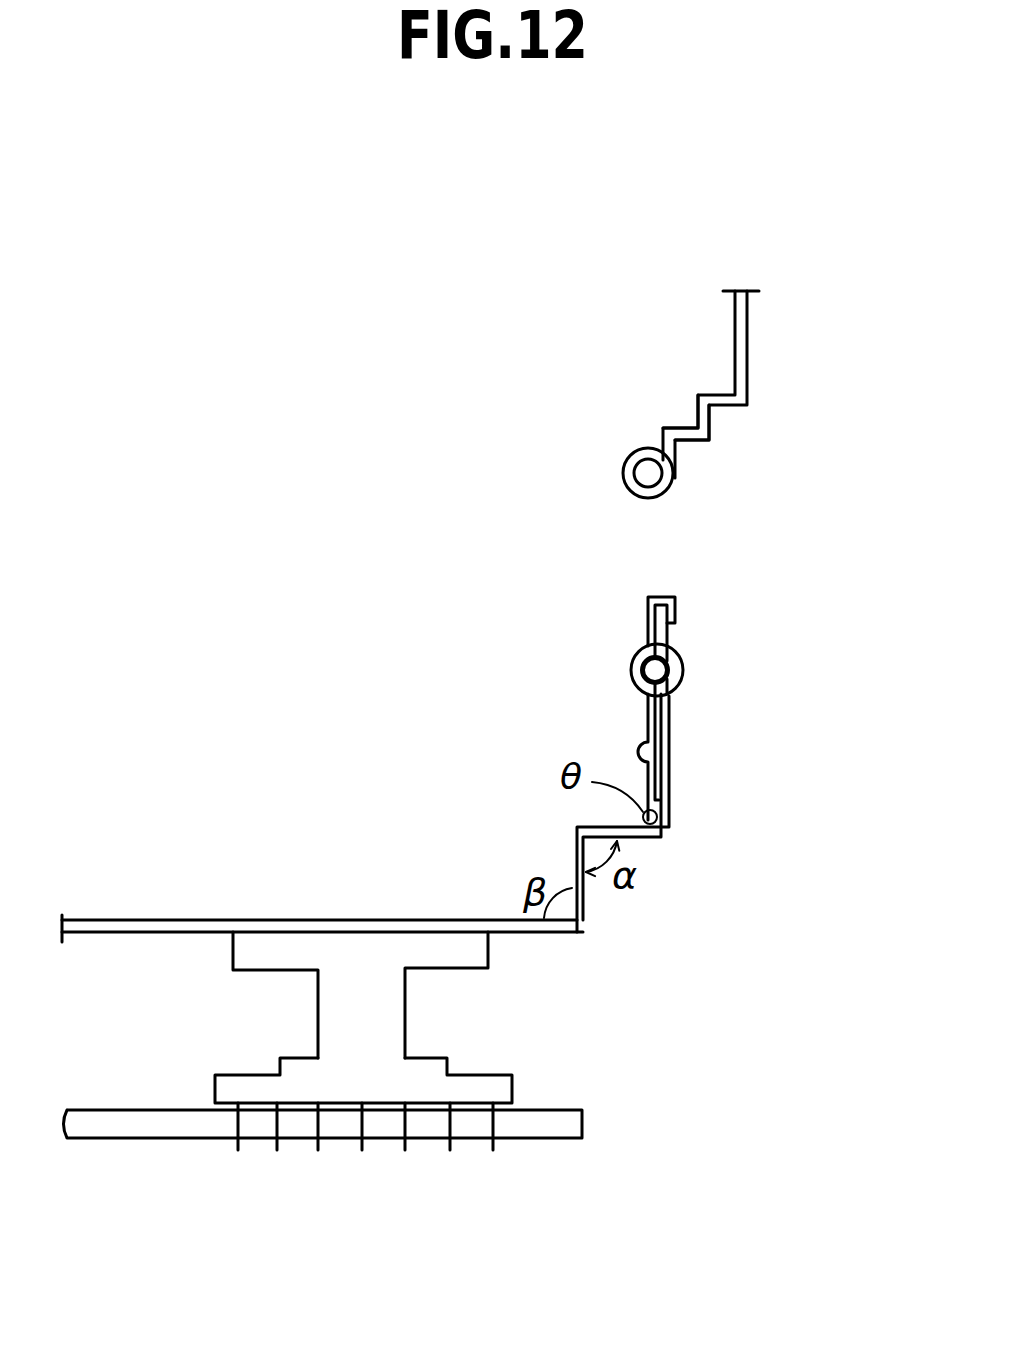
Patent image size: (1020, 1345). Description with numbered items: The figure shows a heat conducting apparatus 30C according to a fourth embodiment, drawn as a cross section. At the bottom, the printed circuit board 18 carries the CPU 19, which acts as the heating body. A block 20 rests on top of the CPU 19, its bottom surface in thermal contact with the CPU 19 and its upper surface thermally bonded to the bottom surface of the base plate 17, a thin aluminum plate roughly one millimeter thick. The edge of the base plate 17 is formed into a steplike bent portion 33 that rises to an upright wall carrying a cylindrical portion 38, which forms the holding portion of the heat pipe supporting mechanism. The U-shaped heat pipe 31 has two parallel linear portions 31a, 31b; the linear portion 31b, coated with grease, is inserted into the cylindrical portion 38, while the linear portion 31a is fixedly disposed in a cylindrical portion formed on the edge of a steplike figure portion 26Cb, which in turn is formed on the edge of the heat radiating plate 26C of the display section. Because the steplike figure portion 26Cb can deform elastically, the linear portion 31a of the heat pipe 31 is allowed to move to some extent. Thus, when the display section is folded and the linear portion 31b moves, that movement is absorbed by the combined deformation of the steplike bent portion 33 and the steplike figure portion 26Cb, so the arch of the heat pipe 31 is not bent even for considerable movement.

The base plate 17 is at (124, 918).
The printed circuit board 18 is at (557, 1127).
The CPU 19 is at (475, 1088).
The block 20 is at (333, 998).
The heat radiating plate 26C is at (750, 320).
The steplike figure portion 26Cb is at (732, 438).
The heat conducting apparatus 30C is at (726, 732).
The heat pipe 31 is at (470, 448).
The linear portion 31a is at (640, 472).
The linear portion 31b is at (640, 670).
The steplike bent portion 33 is at (671, 852).
The cylindrical portion 38 is at (695, 668).